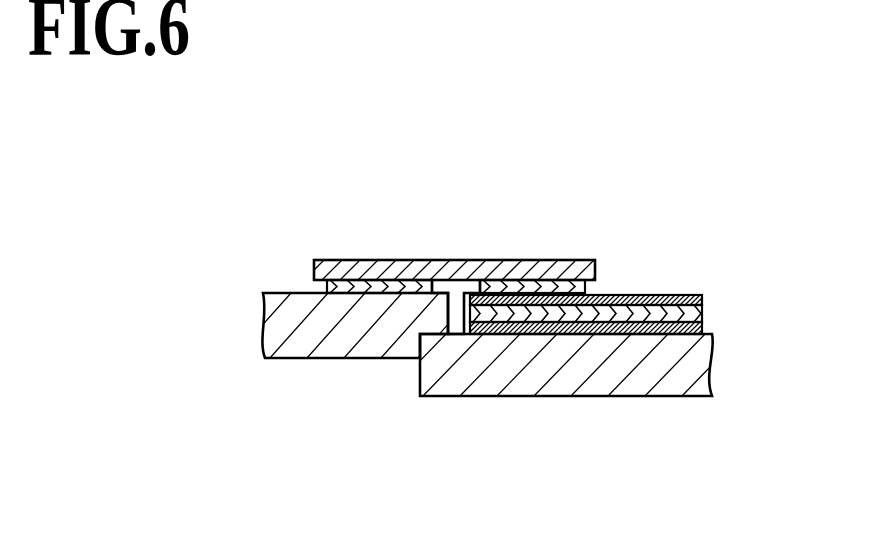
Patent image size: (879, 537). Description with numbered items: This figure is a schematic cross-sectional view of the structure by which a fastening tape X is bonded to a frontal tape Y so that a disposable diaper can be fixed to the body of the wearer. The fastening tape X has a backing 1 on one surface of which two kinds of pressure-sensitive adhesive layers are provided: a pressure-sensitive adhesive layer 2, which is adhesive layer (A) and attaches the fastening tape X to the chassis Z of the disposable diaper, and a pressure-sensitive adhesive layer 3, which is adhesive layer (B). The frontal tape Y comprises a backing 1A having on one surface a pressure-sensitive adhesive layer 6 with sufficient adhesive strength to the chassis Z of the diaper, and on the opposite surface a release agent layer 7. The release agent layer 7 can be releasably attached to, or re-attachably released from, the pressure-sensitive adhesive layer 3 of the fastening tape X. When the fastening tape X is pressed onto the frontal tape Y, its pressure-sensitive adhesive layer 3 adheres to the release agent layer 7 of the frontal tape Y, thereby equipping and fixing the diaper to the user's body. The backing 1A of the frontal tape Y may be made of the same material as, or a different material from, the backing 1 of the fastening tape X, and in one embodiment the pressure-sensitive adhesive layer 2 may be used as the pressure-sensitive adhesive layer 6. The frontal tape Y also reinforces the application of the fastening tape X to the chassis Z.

The backing 1 is at (453, 262).
The backing 1A is at (703, 312).
The pressure-sensitive adhesive layer 2 is at (327, 287).
The pressure-sensitive adhesive layer 3 is at (585, 288).
The pressure-sensitive adhesive layer 6 is at (705, 332).
The release agent layer 7 is at (657, 295).
The fastening tape X is at (453, 230).
The frontal tape Y is at (624, 284).
The chassis Z is at (337, 343).